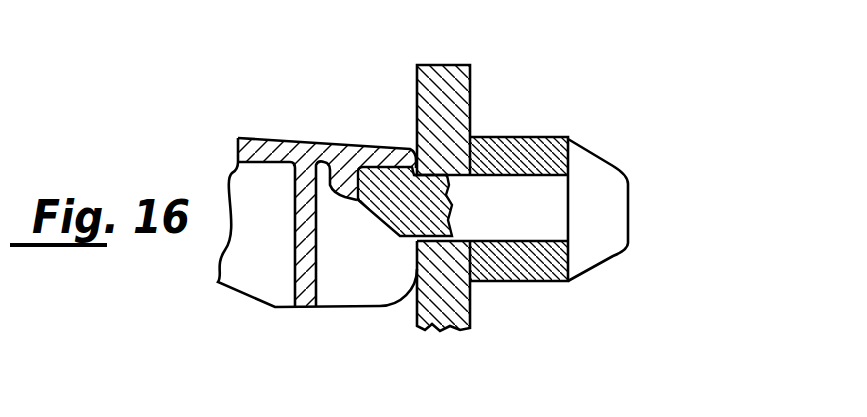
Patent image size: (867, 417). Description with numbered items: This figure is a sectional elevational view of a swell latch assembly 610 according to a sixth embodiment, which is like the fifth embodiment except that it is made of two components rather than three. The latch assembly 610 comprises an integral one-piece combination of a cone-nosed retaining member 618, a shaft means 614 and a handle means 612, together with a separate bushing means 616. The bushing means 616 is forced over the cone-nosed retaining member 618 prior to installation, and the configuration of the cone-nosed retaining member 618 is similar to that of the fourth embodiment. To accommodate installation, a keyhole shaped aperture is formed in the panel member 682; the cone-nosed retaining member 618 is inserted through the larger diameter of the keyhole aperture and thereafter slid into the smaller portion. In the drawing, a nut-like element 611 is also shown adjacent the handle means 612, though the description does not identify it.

The swell latch assembly 610 is at (577, 87).
The nut 611 is at (355, 202).
The handle means 612 is at (298, 147).
The shaft means 614 is at (537, 218).
The bushing means 616 is at (505, 150).
The cone-nosed retaining member 618 is at (605, 163).
The panel member 682 is at (436, 83).